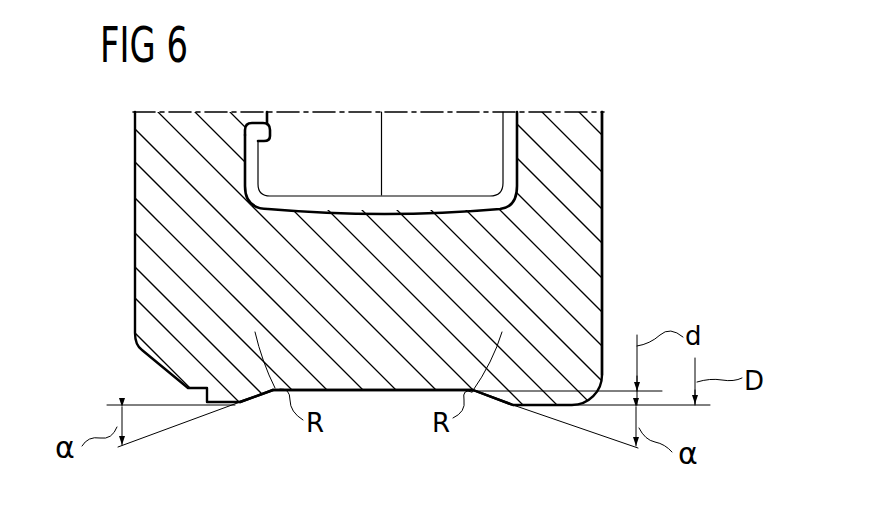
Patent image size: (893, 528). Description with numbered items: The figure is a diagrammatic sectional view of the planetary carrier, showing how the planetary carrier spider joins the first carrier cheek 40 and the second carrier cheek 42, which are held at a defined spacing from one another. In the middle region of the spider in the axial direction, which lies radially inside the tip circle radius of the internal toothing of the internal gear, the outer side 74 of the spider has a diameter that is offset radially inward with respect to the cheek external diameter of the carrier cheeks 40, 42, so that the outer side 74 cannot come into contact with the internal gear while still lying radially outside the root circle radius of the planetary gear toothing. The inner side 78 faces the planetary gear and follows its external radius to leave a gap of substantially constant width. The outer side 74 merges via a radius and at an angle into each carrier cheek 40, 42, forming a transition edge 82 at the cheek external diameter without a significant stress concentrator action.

The first carrier cheek 40 is at (152, 192).
The second carrier cheek 42 is at (587, 178).
The outer side 74 is at (380, 393).
The inner side 78 is at (413, 213).
The transition edge 82 is at (260, 398).